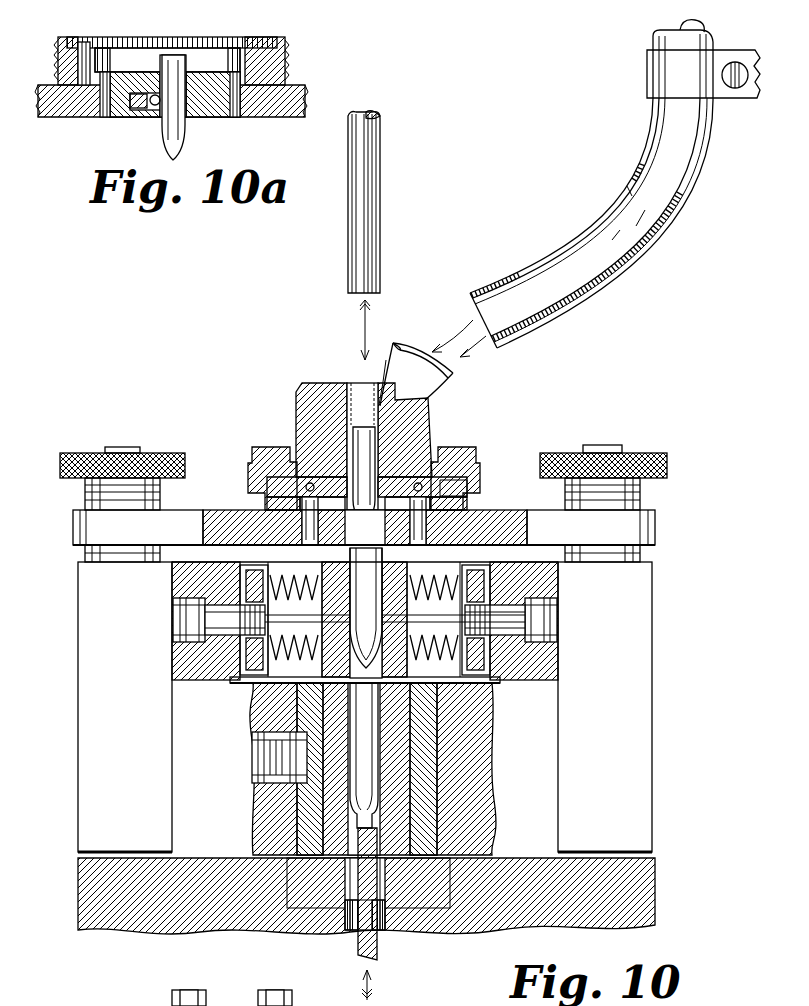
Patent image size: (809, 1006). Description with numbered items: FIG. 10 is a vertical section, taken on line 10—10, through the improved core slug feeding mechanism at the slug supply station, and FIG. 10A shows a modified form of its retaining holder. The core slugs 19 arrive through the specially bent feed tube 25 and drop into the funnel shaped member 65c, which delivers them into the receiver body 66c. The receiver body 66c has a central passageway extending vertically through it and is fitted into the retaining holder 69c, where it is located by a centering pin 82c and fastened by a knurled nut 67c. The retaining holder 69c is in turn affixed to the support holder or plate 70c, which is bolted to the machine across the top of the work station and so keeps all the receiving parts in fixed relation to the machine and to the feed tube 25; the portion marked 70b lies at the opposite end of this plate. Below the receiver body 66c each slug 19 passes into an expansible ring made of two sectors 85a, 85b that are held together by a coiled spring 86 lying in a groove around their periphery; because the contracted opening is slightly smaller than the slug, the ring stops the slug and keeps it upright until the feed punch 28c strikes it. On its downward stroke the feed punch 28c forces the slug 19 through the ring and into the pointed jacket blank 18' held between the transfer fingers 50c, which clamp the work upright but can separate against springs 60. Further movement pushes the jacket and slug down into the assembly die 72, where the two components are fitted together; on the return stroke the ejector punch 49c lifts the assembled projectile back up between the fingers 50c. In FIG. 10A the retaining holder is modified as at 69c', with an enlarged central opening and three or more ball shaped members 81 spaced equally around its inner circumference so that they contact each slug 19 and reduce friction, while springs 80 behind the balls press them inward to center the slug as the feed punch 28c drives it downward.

In FIG. 10, the flexible tube assembly 10 is at (688, 188).
In FIG. 10A, the core slug 19 is at (172, 62).
In FIG. 10, the core slug 19 is at (335, 418).
In FIG. 10, the feed tube 25 is at (487, 292).
In FIG. 10, the feed punch 28c is at (372, 186).
In FIG. 10, the receiver body 66c is at (306, 392).
In FIG. 10, the funnel shaped member 65c is at (438, 368).
In FIG. 10, the expansible sector 85a is at (355, 437).
In FIG. 10, the expansible sector 85b is at (424, 443).
In FIG. 10, the retaining holder 69c is at (247, 478).
In FIG. 10, the knurled nut 67c is at (476, 470).
In FIG. 10A, the centering pin 82c is at (86, 42).
In FIG. 10, the centering pin 82c is at (268, 499).
In FIG. 10, the coiled spring 86 is at (455, 507).
In FIG. 10, the plate left 70b is at (77, 522).
In FIG. 10A, the support holder 70c is at (250, 117).
In FIG. 10, the support holder 70c is at (655, 525).
In FIG. 10, the transfer fingers 50c is at (302, 567).
In FIG. 10, the pointed jacket blank 18' is at (345, 611).
In FIG. 10, the springs 60 is at (437, 577).
In FIG. 10, the assembly die 72 is at (400, 800).
In FIG. 10, the ejector punch 49c is at (378, 950).
In FIG. 10A, the modified retaining holder 69c' is at (194, 77).
In FIG. 10A, the springs 80 is at (150, 104).
In FIG. 10A, the ball shaped members 81 is at (157, 110).